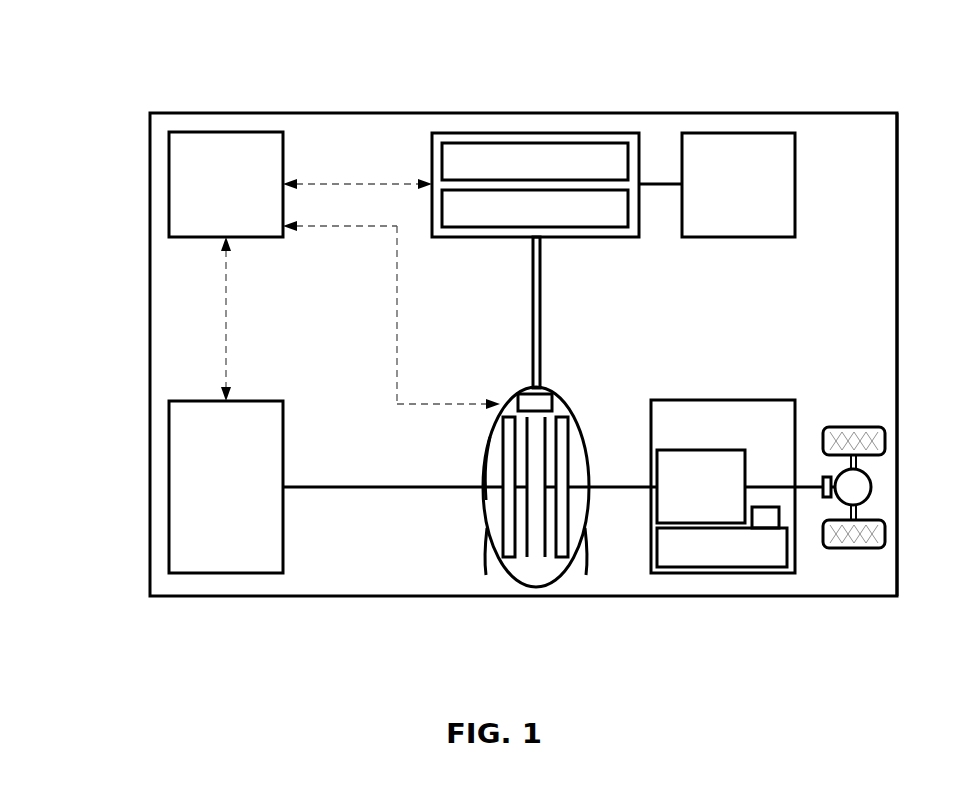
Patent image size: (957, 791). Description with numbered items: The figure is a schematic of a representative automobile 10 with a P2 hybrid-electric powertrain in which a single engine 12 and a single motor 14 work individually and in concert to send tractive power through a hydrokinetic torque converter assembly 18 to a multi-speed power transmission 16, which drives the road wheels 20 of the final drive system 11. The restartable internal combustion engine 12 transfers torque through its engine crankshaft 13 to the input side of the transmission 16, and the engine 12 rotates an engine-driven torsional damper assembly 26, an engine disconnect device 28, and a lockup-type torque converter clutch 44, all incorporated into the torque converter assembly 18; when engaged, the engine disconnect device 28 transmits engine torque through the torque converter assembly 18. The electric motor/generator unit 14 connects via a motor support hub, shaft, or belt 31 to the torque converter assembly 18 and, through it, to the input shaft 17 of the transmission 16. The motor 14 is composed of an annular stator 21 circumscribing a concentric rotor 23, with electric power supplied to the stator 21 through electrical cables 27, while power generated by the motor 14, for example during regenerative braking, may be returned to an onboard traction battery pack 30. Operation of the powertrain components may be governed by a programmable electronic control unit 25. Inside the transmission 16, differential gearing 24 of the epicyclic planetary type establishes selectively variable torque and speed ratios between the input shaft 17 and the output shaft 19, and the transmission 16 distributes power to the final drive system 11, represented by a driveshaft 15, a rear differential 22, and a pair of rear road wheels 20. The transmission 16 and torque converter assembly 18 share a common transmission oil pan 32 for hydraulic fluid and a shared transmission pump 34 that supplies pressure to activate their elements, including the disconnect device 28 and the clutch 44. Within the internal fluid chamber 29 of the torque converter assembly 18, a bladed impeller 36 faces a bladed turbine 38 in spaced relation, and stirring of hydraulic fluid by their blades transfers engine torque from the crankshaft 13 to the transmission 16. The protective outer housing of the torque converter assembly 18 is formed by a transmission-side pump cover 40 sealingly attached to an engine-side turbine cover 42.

The automobile 10 is at (140, 95).
The final drive system 11 is at (873, 312).
The engine 12 is at (184, 401).
The engine crankshaft 13 is at (303, 487).
The motor 14 is at (452, 133).
The driveshaft 15 is at (811, 486).
The multi-speed power transmission 16 is at (663, 400).
The input shaft 17 is at (605, 487).
The torque converter assembly 18 is at (490, 437).
The output shaft 19 is at (762, 486).
The road wheels 20 is at (850, 427).
The stator 21 is at (442, 151).
The rear differential 22 is at (871, 487).
The rotor 23 is at (442, 196).
The differential gearing 24 is at (701, 450).
The electronic control unit 25 is at (184, 132).
The torsional damper assembly 26 is at (569, 548).
The electrical conductors or cables 27 is at (653, 180).
The engine disconnect device 28 is at (503, 548).
The internal fluid chamber 29 is at (494, 468).
The traction battery pack 30 is at (712, 133).
The motor support hub, shaft, or belt 31 is at (533, 266).
The transmission oil pan 32 is at (699, 548).
The transmission pump 34 is at (767, 517).
The impeller 36 is at (527, 553).
The turbine 38 is at (546, 553).
The pump cover 40 is at (487, 528).
The turbine cover 42 is at (585, 528).
The torque converter clutch 44 is at (552, 394).